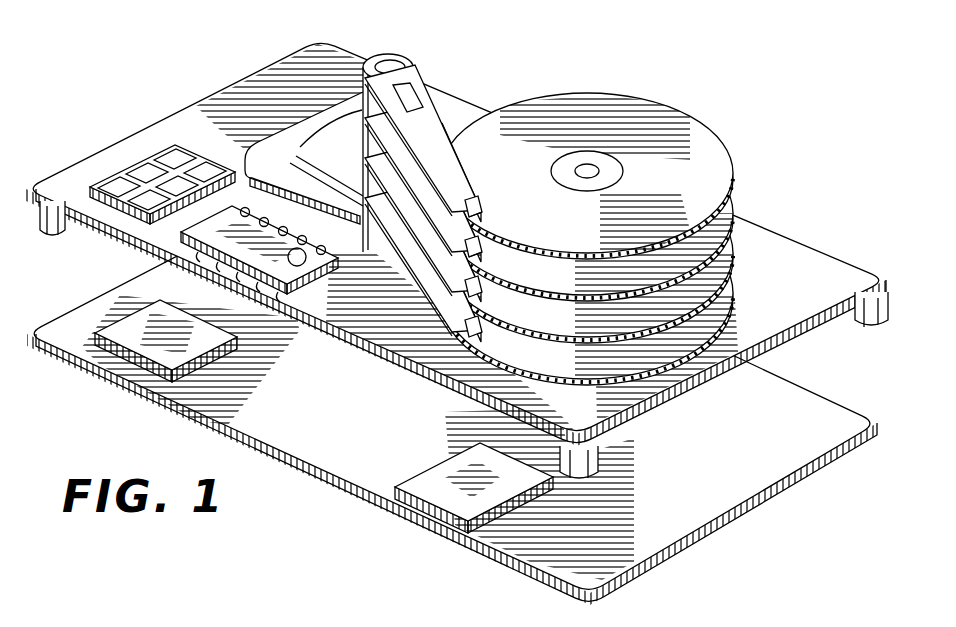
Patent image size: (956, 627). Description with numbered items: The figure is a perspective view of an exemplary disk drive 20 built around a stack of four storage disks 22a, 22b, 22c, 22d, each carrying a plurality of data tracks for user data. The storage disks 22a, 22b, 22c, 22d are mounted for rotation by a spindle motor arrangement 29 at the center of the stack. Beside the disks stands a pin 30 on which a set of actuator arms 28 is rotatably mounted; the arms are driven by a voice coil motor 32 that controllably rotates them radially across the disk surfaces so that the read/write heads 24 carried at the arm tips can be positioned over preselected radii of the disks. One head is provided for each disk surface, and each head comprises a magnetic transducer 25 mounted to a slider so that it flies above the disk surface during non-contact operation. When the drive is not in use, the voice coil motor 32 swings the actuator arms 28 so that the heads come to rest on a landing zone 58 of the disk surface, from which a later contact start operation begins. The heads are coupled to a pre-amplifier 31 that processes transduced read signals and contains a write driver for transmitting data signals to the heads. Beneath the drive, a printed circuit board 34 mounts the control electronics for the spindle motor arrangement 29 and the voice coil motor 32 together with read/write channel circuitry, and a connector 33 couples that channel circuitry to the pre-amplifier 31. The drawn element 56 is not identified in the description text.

The disk drive 20 is at (175, 60).
The storage disk 22a is at (733, 170).
The storage disk 22b is at (733, 217).
The storage disk 22c is at (730, 262).
The storage disk 22d is at (730, 307).
The read/write heads 24 is at (487, 192).
The magnetic transducer 25 is at (480, 240).
The actuator arms 28 is at (433, 131).
The spindle motor arrangement 29 is at (592, 166).
The pin 30 is at (392, 62).
The pre-amplifier 31 is at (310, 270).
The voice coil motor 32 is at (304, 127).
The connector 33 is at (120, 177).
The printed circuit board 34 is at (820, 400).
The slider 56 is at (476, 214).
The landing zone 58 is at (623, 170).